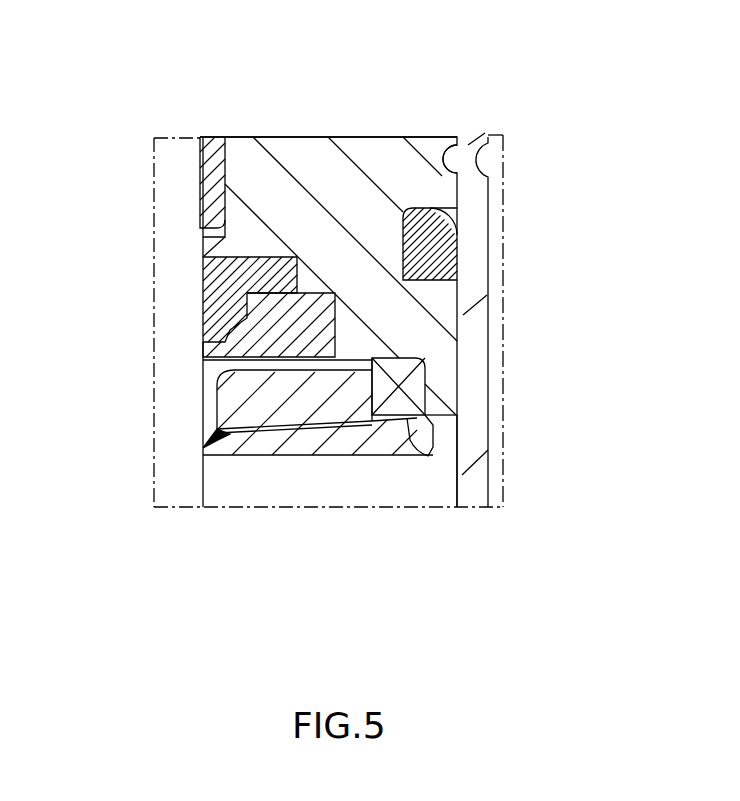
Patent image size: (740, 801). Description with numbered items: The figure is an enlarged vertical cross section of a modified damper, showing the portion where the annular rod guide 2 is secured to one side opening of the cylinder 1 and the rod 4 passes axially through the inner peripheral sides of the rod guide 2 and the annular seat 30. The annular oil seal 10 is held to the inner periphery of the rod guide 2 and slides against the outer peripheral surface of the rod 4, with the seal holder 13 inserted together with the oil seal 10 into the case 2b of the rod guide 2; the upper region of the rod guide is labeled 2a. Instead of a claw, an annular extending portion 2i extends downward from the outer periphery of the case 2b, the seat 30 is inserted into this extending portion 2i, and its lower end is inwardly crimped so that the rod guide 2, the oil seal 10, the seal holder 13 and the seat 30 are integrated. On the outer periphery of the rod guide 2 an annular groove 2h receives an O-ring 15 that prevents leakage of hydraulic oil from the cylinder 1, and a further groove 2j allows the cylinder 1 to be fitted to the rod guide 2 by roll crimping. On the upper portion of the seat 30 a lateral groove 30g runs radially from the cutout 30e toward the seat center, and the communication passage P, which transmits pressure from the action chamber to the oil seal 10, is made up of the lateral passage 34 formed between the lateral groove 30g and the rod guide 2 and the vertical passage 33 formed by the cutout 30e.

The cylinder 1 is at (480, 478).
The rod guide 2 is at (421, 253).
The upper wall portion of cover 2a is at (287, 150).
The case 2b is at (433, 332).
The groove 2h is at (457, 230).
The extending portion 2i is at (452, 413).
The groove 2j is at (468, 162).
The rod 4 is at (163, 165).
The oil seal 10 is at (203, 300).
The seal holder 13 is at (203, 340).
The O-ring 15 is at (458, 268).
The seat 30 is at (265, 489).
The cutout 30e is at (378, 398).
The lateral groove 30g is at (365, 372).
The vertical passage 33 is at (425, 380).
The lateral passage 34 is at (318, 385).
The communication passage P is at (430, 456).